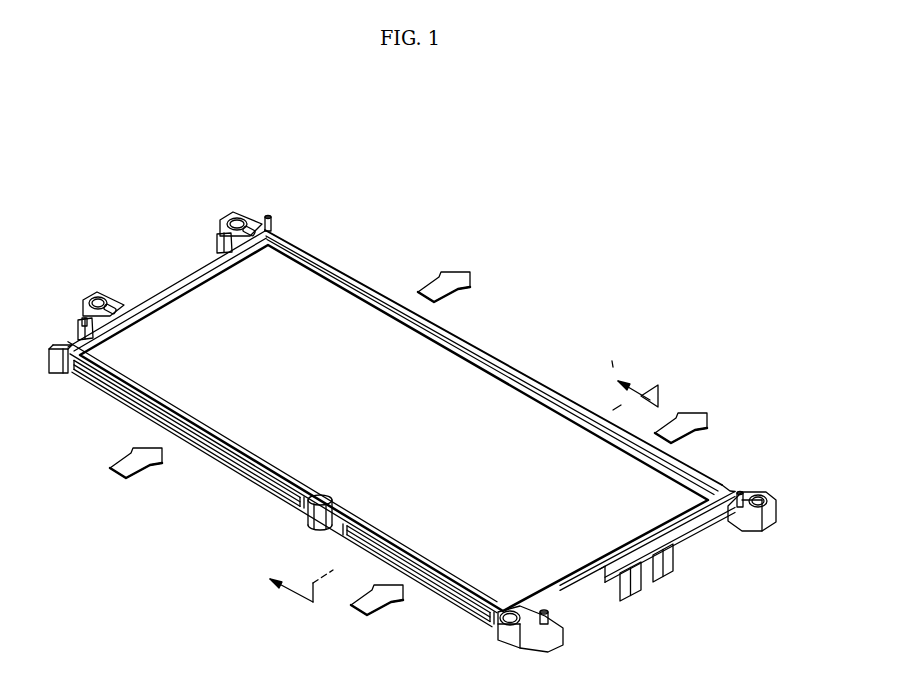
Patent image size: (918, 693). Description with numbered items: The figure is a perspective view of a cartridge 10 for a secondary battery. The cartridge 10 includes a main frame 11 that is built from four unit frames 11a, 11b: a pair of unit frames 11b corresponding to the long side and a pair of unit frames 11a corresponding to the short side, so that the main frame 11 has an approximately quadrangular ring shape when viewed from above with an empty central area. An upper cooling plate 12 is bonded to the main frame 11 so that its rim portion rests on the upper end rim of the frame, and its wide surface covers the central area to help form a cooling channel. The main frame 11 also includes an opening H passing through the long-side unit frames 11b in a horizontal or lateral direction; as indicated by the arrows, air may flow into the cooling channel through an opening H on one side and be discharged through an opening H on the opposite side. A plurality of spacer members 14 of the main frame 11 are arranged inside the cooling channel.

The cartridge 10 is at (142, 99).
The main frame 11 is at (212, 157).
The unit frame 11a is at (195, 272).
The unit frame 11b is at (313, 243).
The upper cooling plate 12 is at (480, 390).
The spacer member 14 is at (460, 592).
The opening H is at (360, 540).